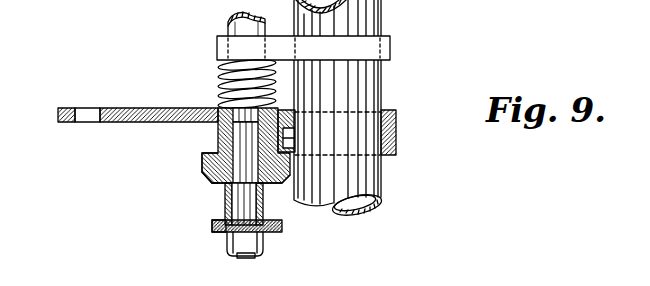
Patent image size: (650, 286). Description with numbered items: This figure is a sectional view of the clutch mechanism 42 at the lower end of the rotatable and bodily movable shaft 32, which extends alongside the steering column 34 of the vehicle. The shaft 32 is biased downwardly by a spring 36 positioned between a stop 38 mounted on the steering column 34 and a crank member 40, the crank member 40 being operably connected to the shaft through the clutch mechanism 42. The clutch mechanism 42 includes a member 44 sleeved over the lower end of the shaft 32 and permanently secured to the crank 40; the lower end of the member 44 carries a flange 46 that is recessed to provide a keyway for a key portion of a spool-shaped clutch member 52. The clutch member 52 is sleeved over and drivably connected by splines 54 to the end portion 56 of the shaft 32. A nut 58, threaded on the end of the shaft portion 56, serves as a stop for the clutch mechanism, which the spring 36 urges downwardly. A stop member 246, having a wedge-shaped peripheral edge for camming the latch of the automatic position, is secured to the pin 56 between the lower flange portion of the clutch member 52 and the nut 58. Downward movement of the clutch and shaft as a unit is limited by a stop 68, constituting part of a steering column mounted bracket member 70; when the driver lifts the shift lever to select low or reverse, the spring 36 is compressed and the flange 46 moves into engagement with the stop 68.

The shaft 32 is at (230, 22).
The stop 38 is at (362, 42).
The spring 36 is at (220, 72).
The splines 54 is at (223, 110).
The crank member 40 is at (128, 108).
The member 44 is at (217, 133).
The flange 46 is at (203, 158).
The clutch mechanism 42 is at (207, 175).
The clutch member 52 is at (226, 184).
The stop 68 is at (284, 183).
The bracket member 70 is at (397, 117).
The steering column 34 is at (379, 187).
The stop member 246 is at (214, 229).
The end portion 56 is at (270, 232).
The nut 58 is at (238, 250).